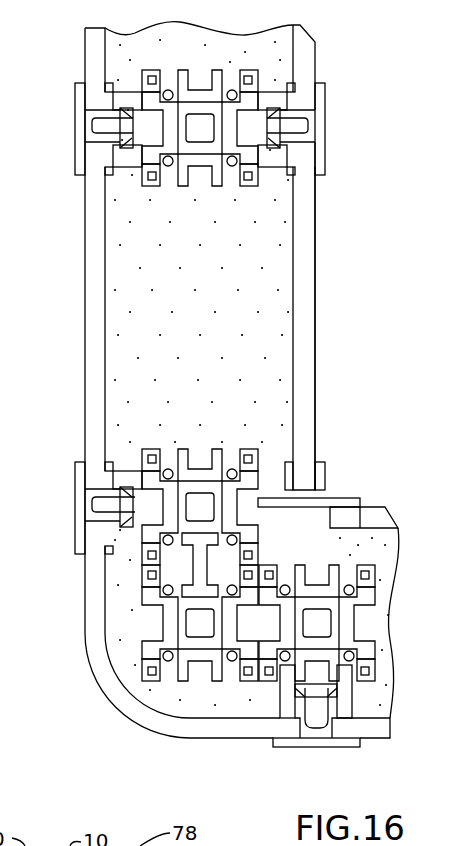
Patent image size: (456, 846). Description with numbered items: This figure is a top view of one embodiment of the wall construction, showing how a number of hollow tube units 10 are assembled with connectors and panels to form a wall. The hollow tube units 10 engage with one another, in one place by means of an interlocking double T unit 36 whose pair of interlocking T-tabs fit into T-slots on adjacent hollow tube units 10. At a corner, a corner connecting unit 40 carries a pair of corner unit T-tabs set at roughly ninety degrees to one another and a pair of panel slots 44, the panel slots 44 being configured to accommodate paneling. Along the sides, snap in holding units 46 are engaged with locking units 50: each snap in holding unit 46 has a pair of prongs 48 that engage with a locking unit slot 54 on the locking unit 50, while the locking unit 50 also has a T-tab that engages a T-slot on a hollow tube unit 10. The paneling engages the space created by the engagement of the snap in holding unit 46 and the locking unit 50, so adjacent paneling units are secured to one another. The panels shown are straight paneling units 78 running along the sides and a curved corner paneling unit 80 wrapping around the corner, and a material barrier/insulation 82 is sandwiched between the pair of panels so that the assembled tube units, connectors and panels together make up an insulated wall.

The hollow tube unit 10 is at (213, 183).
The interlocking double T unit 36 is at (197, 570).
The corner connecting unit 40 is at (320, 508).
The panel slot 44 is at (308, 453).
The snap in holding unit 46 is at (80, 127).
The prong 48 is at (127, 110).
The locking unit 50 is at (110, 97).
The locking unit slot 54 is at (278, 110).
The straight paneling unit 78 is at (85, 280).
The curved corner paneling unit 80 is at (93, 618).
The material barrier/insulation 82 is at (273, 335).